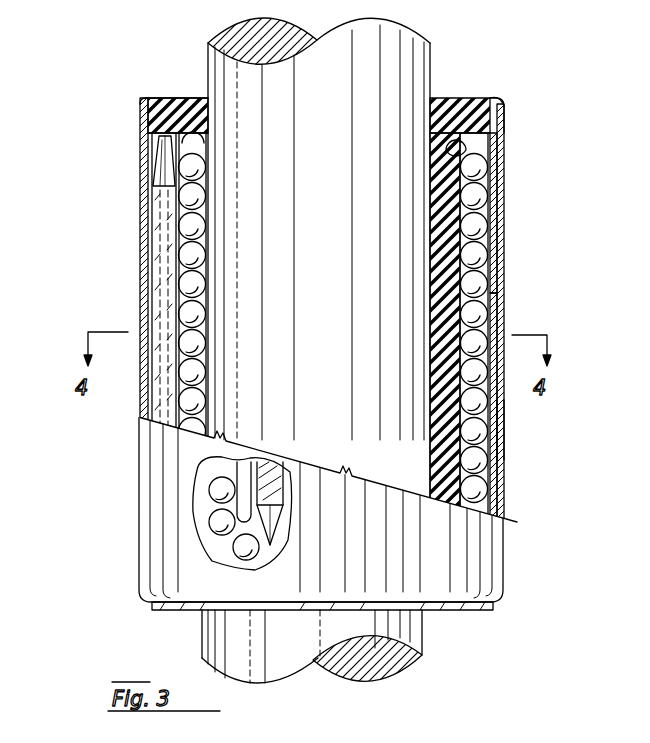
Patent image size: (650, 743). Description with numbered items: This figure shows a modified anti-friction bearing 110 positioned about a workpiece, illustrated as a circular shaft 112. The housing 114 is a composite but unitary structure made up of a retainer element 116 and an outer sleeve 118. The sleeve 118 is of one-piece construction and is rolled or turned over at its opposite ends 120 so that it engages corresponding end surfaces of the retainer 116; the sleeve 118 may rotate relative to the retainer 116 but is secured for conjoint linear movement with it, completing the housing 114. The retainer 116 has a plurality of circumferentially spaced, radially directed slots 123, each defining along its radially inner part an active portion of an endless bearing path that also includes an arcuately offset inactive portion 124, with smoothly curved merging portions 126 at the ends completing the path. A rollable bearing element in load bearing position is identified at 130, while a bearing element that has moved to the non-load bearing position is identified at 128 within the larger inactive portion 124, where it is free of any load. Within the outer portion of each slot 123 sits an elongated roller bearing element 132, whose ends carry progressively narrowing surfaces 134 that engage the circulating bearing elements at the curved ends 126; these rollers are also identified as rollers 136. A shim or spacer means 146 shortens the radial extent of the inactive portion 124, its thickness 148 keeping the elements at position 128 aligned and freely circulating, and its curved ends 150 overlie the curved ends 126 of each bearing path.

The anti-friction bearing 110 is at (565, 155).
The circular shaft 112 is at (400, 680).
The housing 114 is at (132, 486).
The retainer element 116 is at (445, 98).
The outer sleeve 118 is at (505, 124).
The opposite ends of the sleeve 120 is at (500, 98).
The radially directed slots 123 is at (150, 146).
The inactive portion 124 is at (215, 515).
The merging portions 126 is at (200, 135).
The non-load bearing position 128 is at (478, 258).
The bearing element in load bearing position 130 is at (200, 262).
The bearing element (elongated roller) 132 is at (160, 278).
The progressively narrowing surfaces 134 is at (160, 172).
The rollers 136 is at (150, 112).
The spacer means 146 is at (512, 432).
The thickness of the spacer means 148 is at (497, 472).
The curved ends of the spacer means 150 is at (497, 140).